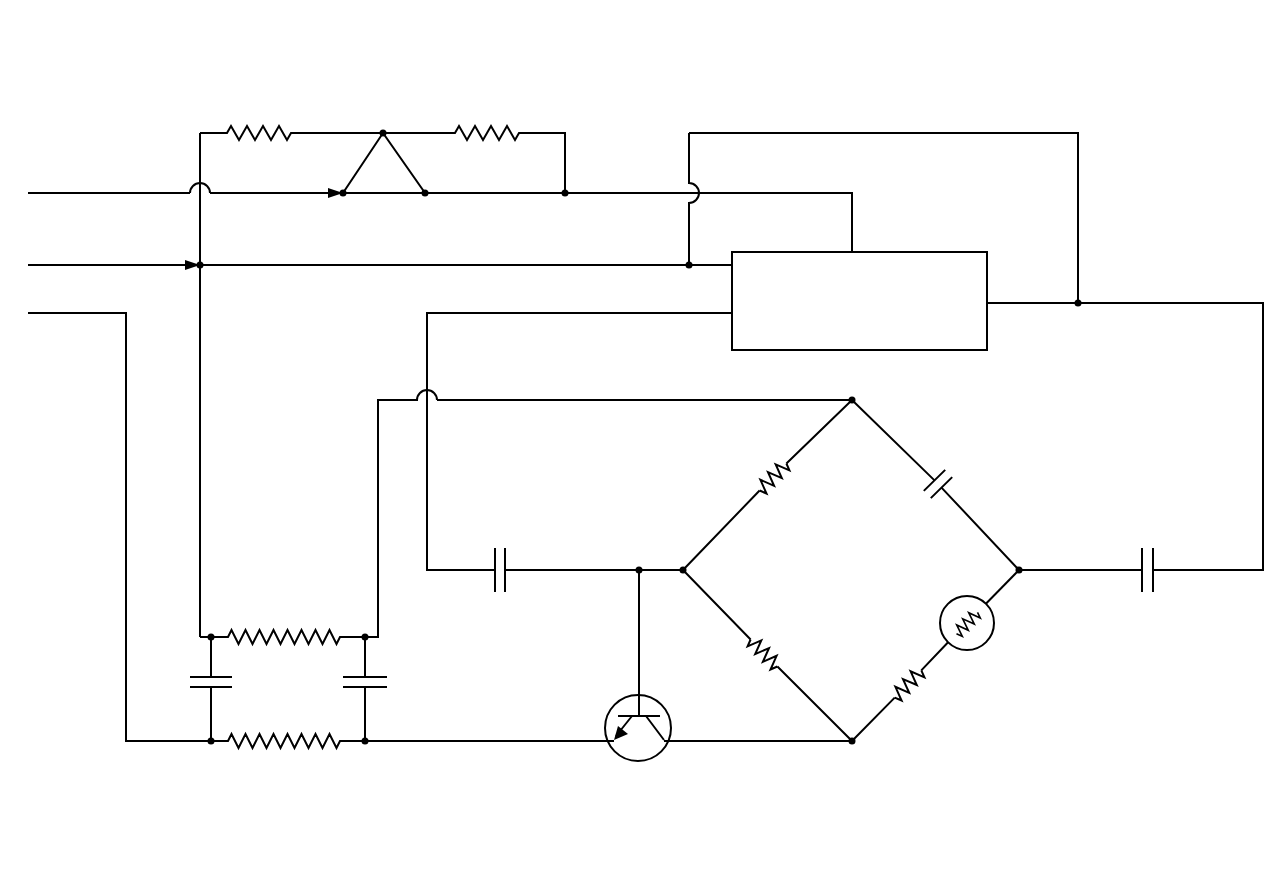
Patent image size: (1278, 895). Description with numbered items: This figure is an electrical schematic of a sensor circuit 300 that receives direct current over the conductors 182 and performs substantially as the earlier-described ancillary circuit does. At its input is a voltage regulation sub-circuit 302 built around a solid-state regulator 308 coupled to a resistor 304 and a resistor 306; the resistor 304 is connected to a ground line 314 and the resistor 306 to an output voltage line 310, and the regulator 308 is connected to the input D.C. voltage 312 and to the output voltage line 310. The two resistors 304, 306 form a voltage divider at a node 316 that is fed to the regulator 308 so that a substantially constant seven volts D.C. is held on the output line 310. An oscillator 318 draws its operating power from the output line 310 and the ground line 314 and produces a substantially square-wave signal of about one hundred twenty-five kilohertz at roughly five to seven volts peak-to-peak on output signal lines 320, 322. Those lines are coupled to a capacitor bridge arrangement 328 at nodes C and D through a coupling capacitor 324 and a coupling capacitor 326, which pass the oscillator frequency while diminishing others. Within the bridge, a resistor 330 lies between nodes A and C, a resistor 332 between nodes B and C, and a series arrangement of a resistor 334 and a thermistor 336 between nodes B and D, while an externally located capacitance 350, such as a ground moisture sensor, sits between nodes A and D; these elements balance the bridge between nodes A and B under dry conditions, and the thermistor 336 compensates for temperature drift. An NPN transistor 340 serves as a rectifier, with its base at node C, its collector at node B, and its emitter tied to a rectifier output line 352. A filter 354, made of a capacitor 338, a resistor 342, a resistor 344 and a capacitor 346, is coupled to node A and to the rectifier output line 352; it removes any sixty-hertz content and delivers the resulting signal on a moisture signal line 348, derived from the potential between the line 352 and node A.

The conductors 182 is at (120, 258).
The sensor circuit 300 is at (1128, 138).
The voltage regulation sub-circuit 302 is at (453, 54).
The resistor 304 is at (263, 128).
The resistor 306 is at (487, 125).
The solid-state regulator 308 is at (380, 196).
The output voltage line 310 is at (594, 190).
The input D.C. voltage 312 is at (266, 195).
The ground line 314 is at (293, 263).
The node 316 is at (383, 133).
The oscillator 318 is at (930, 351).
The output signal line 320 is at (1018, 302).
The output signal line 322 is at (583, 315).
The coupling capacitor 324 is at (505, 552).
The coupling capacitor 326 is at (1157, 550).
The capacitor bridge arrangement 328 is at (795, 773).
The resistor 330 is at (790, 465).
The resistor 332 is at (778, 635).
The resistor 334 is at (922, 678).
The thermistor 336 is at (968, 595).
The capacitor 338 is at (383, 677).
The NPN transistor 340 is at (655, 698).
The resistor 342 is at (280, 745).
The resistor 344 is at (287, 632).
The capacitor 346 is at (203, 677).
The moisture signal line 348 is at (126, 425).
The externally located capacitance 350 is at (955, 483).
The rectifier output line 352 is at (518, 744).
The filter 354 is at (236, 820).